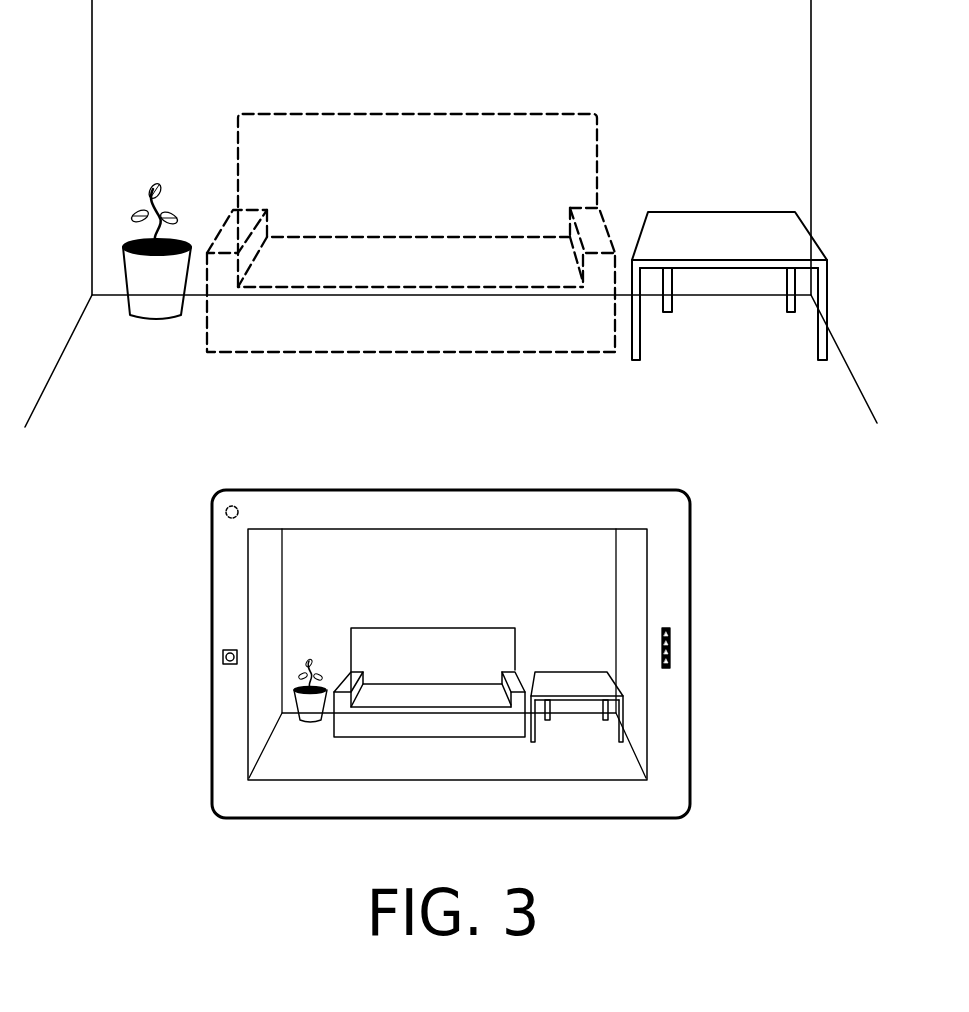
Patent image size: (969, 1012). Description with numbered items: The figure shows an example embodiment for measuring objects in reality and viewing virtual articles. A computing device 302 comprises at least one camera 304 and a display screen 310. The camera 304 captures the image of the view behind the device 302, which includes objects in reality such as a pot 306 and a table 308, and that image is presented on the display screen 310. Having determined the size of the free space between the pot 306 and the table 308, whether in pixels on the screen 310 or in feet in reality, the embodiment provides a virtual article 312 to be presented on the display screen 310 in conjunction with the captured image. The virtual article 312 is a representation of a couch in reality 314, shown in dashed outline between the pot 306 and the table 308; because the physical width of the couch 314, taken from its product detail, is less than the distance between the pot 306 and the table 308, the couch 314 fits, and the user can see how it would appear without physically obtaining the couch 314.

The computing device 302 is at (662, 489).
The camera 304 is at (234, 505).
The pot 306 is at (141, 316).
The table 308 is at (697, 211).
The display screen 310 is at (648, 592).
The virtual article 312 is at (428, 627).
The object in reality (couch) 314 is at (426, 113).